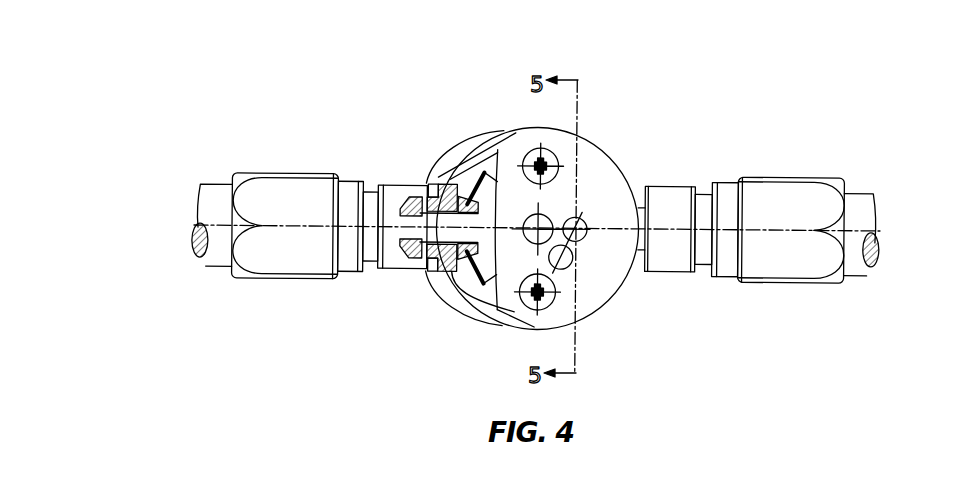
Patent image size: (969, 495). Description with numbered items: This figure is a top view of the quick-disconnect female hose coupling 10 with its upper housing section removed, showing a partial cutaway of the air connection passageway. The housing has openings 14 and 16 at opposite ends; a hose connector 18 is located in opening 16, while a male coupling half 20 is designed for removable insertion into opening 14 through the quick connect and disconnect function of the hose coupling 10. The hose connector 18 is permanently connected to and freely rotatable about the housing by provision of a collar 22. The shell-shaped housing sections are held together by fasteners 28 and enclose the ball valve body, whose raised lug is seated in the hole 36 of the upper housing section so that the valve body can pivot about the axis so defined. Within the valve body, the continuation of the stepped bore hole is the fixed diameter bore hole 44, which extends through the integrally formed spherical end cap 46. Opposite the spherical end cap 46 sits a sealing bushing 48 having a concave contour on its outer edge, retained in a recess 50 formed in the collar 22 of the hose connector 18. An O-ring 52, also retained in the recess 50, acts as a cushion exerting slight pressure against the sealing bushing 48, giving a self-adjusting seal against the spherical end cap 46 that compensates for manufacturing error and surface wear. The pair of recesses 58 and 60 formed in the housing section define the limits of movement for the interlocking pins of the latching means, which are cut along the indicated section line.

The hose coupling 10 is at (452, 106).
The opening 14 is at (627, 177).
The opening 16 is at (438, 192).
The hose connector 18 is at (400, 189).
The male coupling half 20 is at (672, 275).
The collar 22 is at (445, 187).
The fasteners 28 is at (538, 150).
The hole 36 is at (551, 214).
The fixed diameter bore hole 44 is at (455, 265).
The spherical end cap 46 is at (479, 272).
The sealing bushing 48 is at (435, 186).
The recess 50 is at (442, 264).
The O-ring 52 is at (428, 260).
The recess 58 is at (566, 268).
The recess 60 is at (587, 218).